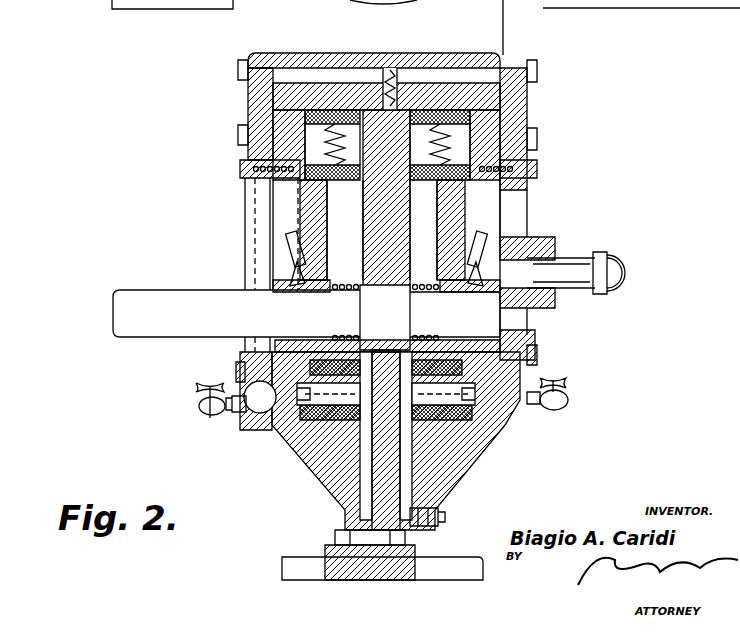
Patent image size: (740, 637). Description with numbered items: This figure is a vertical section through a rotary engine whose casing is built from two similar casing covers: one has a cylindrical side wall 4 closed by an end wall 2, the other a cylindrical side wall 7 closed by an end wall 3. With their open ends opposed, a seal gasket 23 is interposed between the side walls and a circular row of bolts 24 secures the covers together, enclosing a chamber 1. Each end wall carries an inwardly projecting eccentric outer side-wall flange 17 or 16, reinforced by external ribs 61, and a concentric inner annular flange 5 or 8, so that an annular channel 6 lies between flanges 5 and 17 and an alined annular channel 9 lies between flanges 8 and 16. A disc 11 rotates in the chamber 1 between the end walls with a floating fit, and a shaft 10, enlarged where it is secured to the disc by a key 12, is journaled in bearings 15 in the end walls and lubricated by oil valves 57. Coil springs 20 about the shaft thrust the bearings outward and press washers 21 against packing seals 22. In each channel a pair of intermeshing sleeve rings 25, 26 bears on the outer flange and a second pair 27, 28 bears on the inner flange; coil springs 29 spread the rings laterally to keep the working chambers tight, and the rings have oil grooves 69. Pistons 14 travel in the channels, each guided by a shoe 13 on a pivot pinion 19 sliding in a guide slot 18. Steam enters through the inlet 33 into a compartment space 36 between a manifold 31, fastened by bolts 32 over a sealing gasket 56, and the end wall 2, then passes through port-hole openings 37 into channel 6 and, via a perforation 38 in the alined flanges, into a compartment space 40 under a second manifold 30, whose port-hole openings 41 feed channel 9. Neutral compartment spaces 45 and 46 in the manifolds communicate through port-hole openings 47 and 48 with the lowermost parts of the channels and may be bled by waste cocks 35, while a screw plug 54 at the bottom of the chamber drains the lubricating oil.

The chamber 1 is at (507, 15).
The end wall 2 is at (515, 95).
The end wall 3 is at (290, 105).
The cylindrical side wall 4 is at (362, 582).
The inner annular flange 5 is at (525, 200).
The annular channel 6 is at (470, 150).
The cylindrical side wall 7 is at (424, 278).
The inner annular flange 8 is at (300, 195).
The annular channel 9 is at (245, 163).
The shaft 10 is at (135, 300).
The disc 11 is at (368, 85).
The key 12 is at (398, 290).
The guide shoe 13 is at (380, 470).
The piston 14 is at (312, 418).
The bearing 15 is at (272, 348).
The outer side-wall flange 16 is at (302, 56).
The outer side-wall flange 17 is at (448, 56).
The guide slot 18 is at (345, 520).
The pivot pinion 19 is at (345, 420).
The spring 20 is at (352, 338).
The washer 21 is at (352, 280).
The packing seal 22 is at (330, 292).
The seal gasket 23 is at (360, 583).
The bolt 24 is at (395, 580).
The sleeve ring 25 is at (262, 60).
The sleeve ring 26 is at (386, 145).
The sleeve ring 27 is at (383, 197).
The sleeve ring 28 is at (386, 235).
The coil spring 29 is at (318, 440).
The manifold 30 is at (248, 65).
The manifold 31 is at (490, 120).
The bolt 32 is at (245, 175).
The inlet 33 is at (585, 258).
The waste cock 35 is at (198, 405).
The compartment space 36 is at (530, 68).
The port-hole opening 37 is at (537, 140).
The perforation 38 is at (392, 68).
The compartment space 40 is at (265, 110).
The port-hole opening 41 is at (285, 145).
The neutral compartment space 45 is at (535, 432).
The neutral compartment space 46 is at (270, 410).
The port-hole opening 47 is at (522, 415).
The port-hole opening 48 is at (282, 407).
The screw plug 54 is at (445, 516).
The sealing gasket 56 is at (275, 150).
The oil valve 57 is at (290, 250).
The rib 61 is at (320, 432).
The oil groove 69 is at (528, 165).